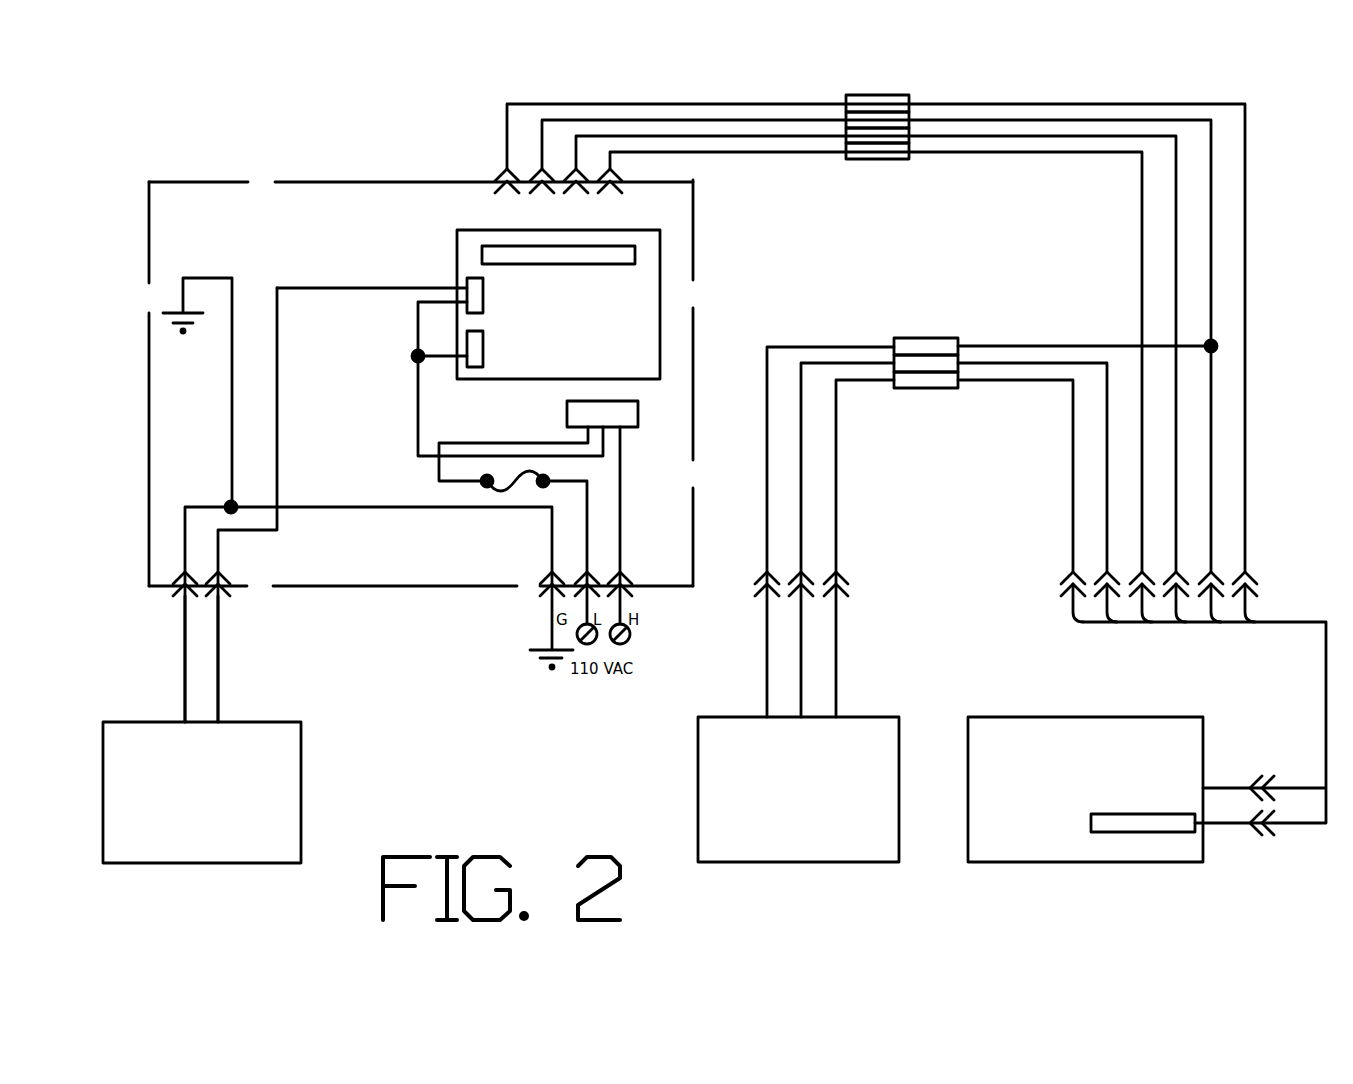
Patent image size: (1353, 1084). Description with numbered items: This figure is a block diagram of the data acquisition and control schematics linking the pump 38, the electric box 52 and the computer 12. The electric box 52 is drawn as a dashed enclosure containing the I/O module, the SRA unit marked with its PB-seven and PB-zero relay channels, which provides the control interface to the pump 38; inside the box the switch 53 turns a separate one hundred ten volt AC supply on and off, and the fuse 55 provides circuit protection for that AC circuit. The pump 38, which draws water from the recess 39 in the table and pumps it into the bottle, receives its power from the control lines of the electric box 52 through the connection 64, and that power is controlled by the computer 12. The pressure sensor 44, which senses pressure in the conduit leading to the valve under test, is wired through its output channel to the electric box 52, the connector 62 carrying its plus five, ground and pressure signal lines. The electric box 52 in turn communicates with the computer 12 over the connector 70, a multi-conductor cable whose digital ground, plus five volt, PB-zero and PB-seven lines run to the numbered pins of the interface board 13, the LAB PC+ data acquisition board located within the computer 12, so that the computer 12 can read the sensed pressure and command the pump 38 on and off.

The computer 12 is at (1084, 705).
The interface board 13 is at (1064, 831).
The pump 38 is at (322, 790).
The recess 39 is at (433, 268).
The pressure sensor 44 is at (671, 802).
The electric box 52 is at (722, 300).
The switch 53 is at (545, 425).
The fuse 55 is at (512, 512).
The connector 62 is at (862, 528).
The connection 64 is at (269, 574).
The connector 70 is at (1282, 200).